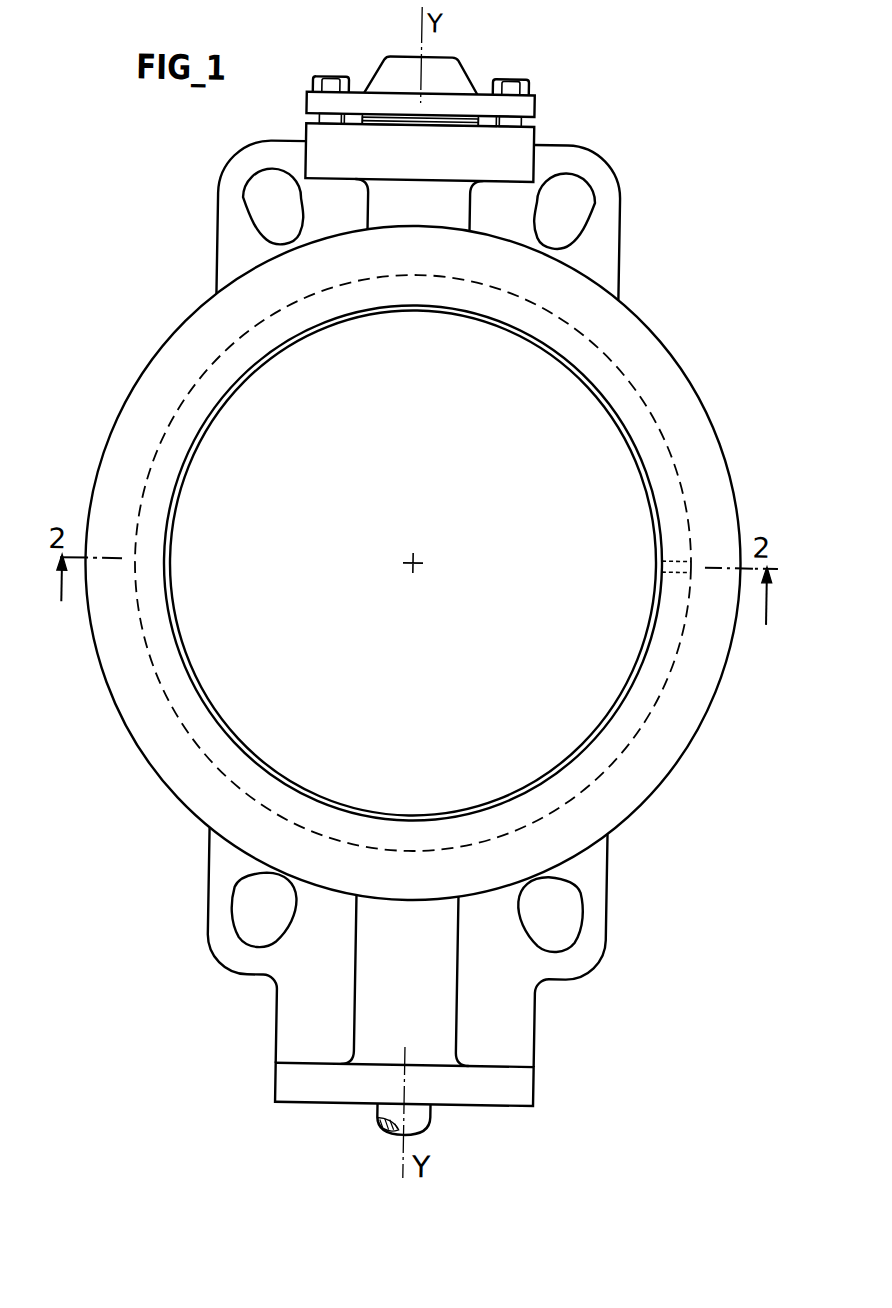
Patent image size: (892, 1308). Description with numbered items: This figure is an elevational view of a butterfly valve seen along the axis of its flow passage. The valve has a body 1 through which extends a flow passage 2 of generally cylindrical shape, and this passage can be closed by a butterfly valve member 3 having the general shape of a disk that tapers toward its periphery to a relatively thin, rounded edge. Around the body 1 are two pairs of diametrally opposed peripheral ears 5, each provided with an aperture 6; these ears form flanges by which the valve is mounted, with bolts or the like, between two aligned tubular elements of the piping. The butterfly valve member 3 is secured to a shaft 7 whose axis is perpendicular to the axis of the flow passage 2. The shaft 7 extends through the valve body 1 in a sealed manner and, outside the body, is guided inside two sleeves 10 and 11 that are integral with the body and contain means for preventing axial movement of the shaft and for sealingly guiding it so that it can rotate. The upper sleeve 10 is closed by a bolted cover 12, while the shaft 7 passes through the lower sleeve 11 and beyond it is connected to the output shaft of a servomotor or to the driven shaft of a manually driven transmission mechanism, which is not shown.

The body 1 is at (686, 378).
The flow passage 2 is at (617, 421).
The butterfly valve member 3 is at (615, 489).
The peripheral ears 5 is at (584, 177).
The aperture 6 is at (577, 208).
The shaft 7 is at (422, 1120).
The sleeve 10 is at (452, 208).
The sleeve 11 is at (434, 990).
The bolted cover 12 is at (450, 81).